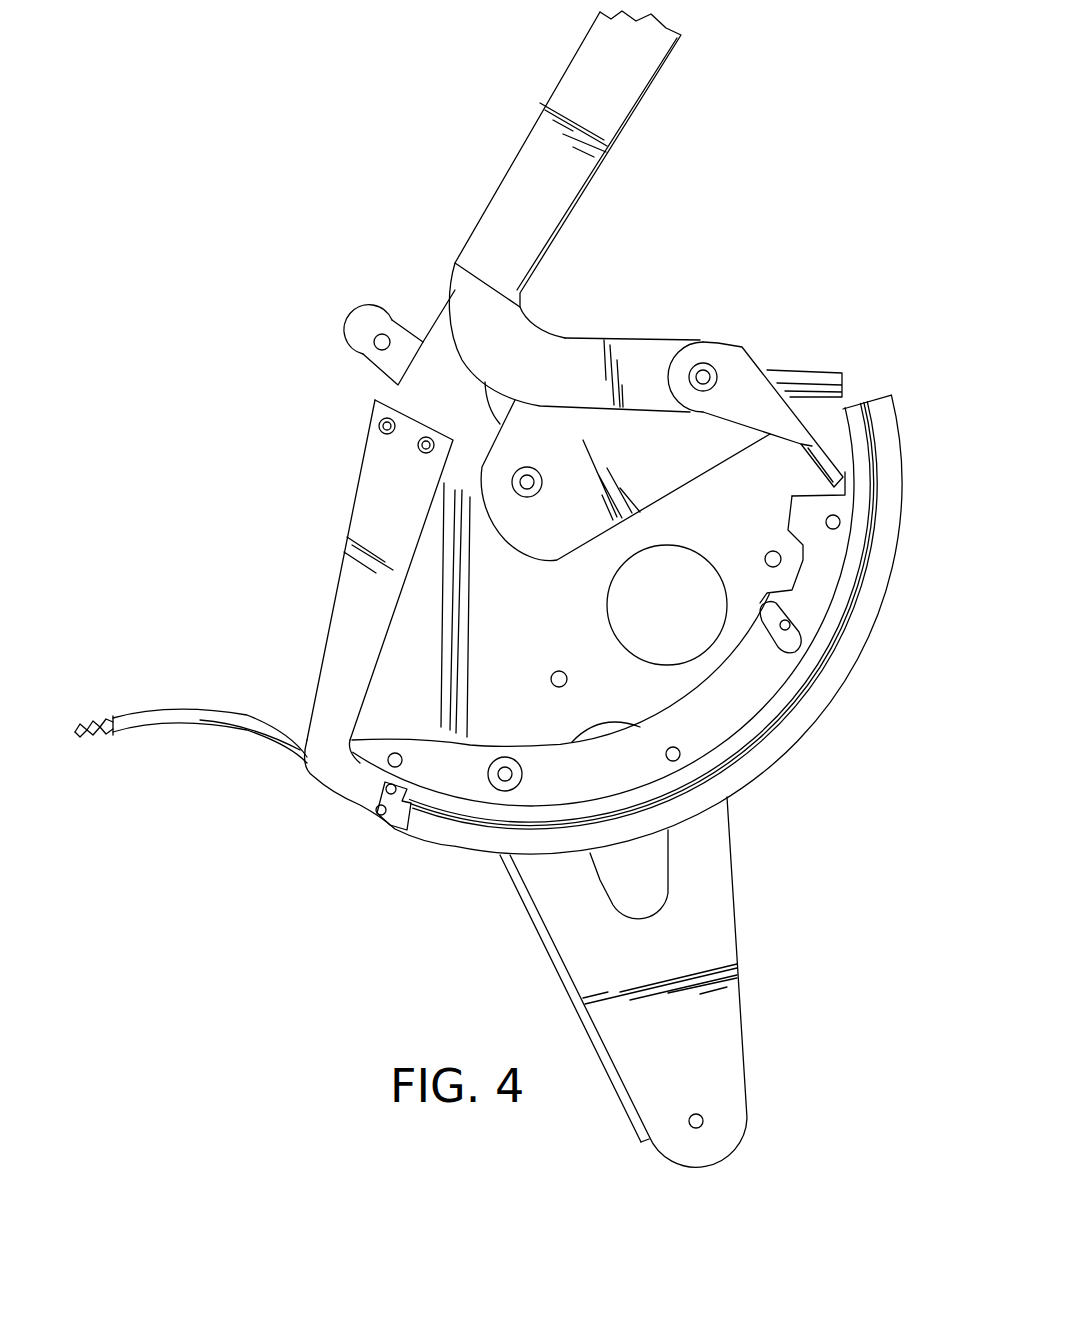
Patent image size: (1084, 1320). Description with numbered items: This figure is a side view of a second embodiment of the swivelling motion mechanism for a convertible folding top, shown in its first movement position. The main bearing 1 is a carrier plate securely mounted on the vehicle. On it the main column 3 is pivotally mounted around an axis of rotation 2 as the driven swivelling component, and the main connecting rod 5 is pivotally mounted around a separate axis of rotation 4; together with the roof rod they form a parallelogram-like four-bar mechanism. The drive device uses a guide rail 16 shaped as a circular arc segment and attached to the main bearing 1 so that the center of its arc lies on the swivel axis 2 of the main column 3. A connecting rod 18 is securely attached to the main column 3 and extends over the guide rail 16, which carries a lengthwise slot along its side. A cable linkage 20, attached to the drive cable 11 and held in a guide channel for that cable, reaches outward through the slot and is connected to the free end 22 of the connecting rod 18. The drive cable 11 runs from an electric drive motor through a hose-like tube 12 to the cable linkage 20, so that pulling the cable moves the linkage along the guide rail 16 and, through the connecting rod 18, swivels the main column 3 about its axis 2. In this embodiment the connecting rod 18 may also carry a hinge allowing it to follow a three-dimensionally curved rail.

The main bearing 1 is at (693, 1017).
The axis of rotation 2 is at (518, 483).
The main column 3 is at (448, 355).
The axis of rotation 4 is at (706, 372).
The main connecting rod 5 is at (533, 182).
The drive cable 11 is at (92, 715).
The tube 12 is at (200, 712).
The guide rail 16 is at (828, 687).
The connecting rod 18 is at (357, 598).
The cable linkage 20 is at (403, 817).
The free end 22 is at (360, 793).